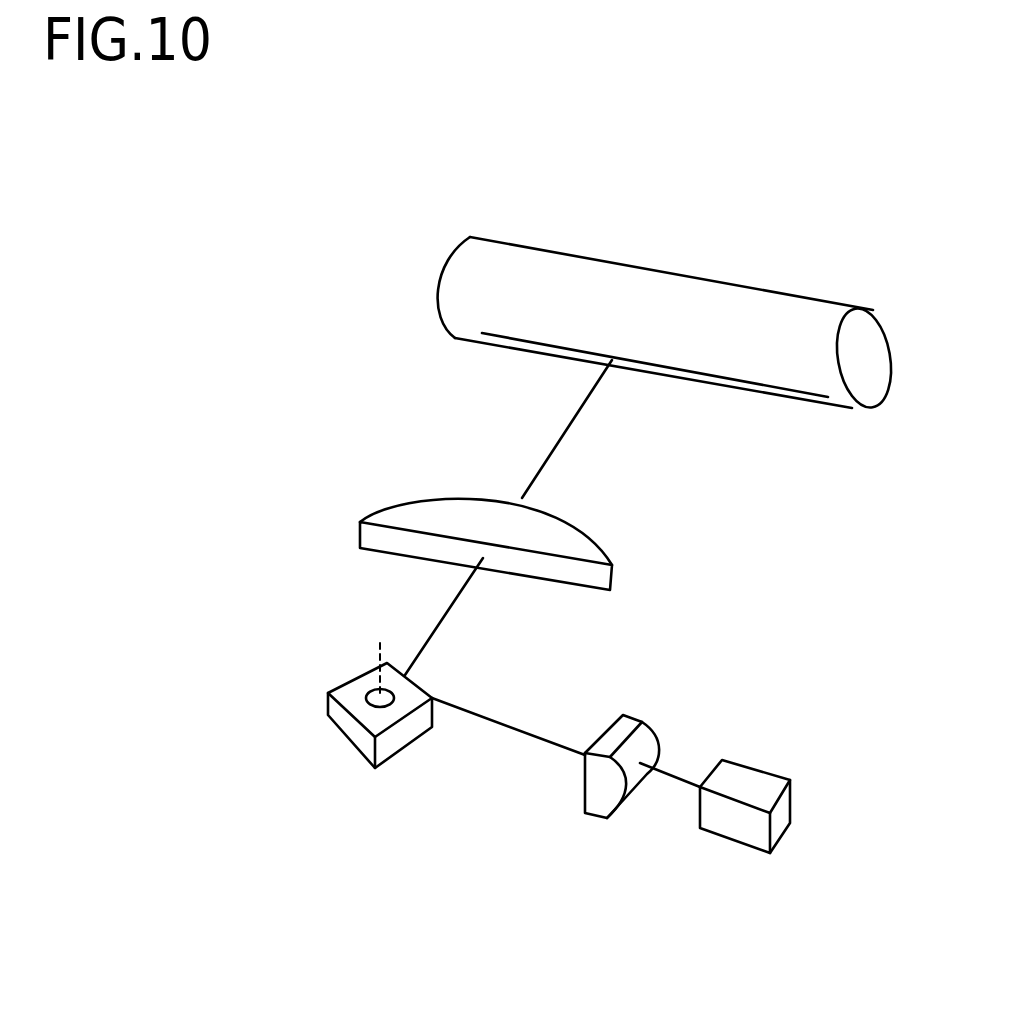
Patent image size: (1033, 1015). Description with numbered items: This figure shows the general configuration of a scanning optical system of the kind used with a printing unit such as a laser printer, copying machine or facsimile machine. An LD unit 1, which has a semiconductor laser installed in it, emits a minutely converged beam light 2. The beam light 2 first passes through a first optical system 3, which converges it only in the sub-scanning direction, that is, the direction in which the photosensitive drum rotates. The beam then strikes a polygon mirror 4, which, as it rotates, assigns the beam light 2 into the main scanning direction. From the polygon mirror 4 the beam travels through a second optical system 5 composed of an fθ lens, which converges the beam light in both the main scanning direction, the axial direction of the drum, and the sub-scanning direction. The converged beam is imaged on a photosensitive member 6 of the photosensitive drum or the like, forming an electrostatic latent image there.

The LD unit 1 is at (753, 852).
The beam light 2 is at (682, 770).
The first optical system 3 is at (584, 790).
The polygon mirror 4 is at (328, 719).
The second optical system 5 is at (408, 503).
The photosensitive member 6 is at (740, 292).